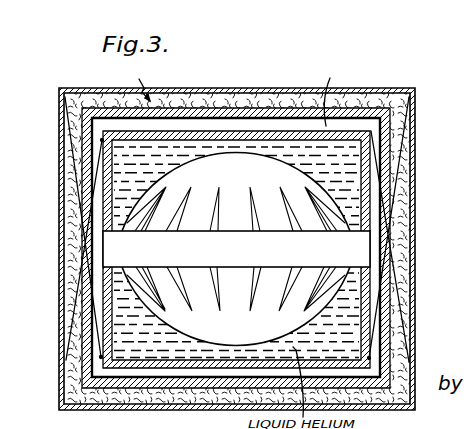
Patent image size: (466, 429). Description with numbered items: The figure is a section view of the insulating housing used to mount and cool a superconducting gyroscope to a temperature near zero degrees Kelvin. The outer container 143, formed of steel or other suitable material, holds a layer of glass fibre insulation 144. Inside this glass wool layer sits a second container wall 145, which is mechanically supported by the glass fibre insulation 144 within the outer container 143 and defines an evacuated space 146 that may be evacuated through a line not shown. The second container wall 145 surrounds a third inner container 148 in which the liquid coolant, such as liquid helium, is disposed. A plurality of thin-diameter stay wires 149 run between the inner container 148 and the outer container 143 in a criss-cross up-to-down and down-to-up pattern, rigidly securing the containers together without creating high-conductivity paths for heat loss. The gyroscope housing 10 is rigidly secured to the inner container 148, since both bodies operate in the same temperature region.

The gyroscope housing 10 is at (255, 160).
The outer container 143 is at (414, 169).
The glass fibre insulation 144 is at (407, 223).
The second container wall 145 is at (386, 153).
The evacuated space 146 is at (373, 128).
The inner container 148 is at (104, 153).
The stay wires 149 is at (76, 297).